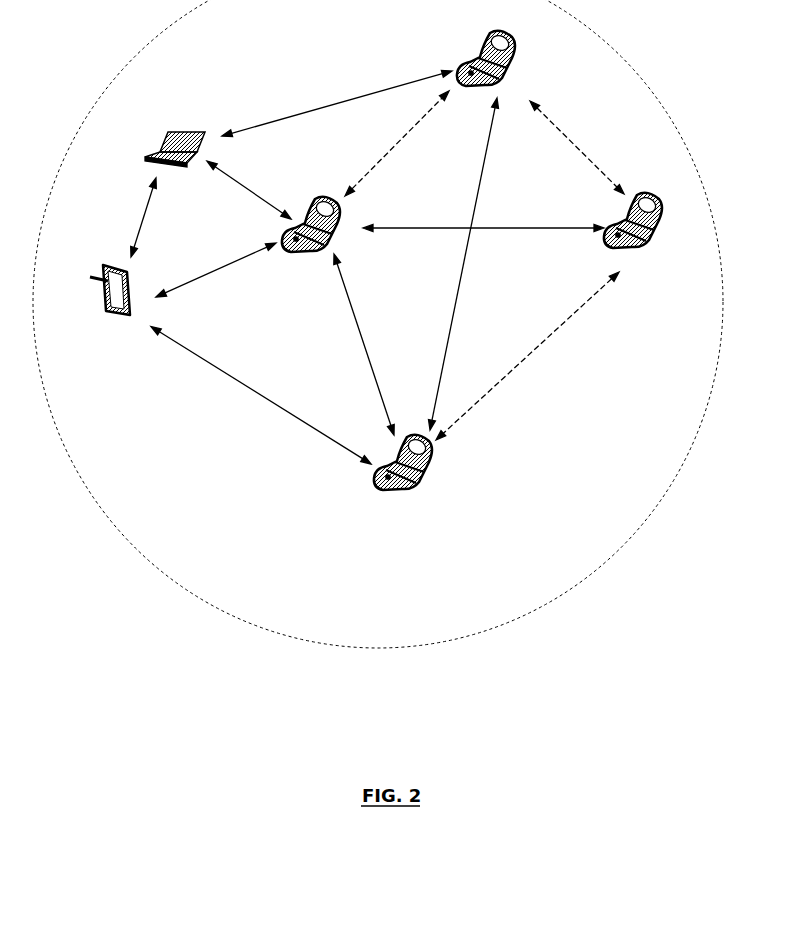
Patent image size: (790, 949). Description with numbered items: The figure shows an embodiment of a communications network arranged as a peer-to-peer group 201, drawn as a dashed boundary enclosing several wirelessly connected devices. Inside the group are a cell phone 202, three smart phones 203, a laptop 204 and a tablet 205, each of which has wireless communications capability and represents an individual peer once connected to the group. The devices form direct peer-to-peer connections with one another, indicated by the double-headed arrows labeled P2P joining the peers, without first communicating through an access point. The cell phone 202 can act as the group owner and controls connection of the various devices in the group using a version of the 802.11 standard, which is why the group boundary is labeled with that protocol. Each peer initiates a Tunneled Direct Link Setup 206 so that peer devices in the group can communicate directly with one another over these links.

The peer-to-peer group 201 is at (393, 607).
The cell phone 202 is at (331, 243).
The smart phone 203 is at (503, 74).
The laptop 204 is at (160, 152).
The tablet 205 is at (115, 315).
The Tunneled Direct Link Setup 206 is at (545, 337).